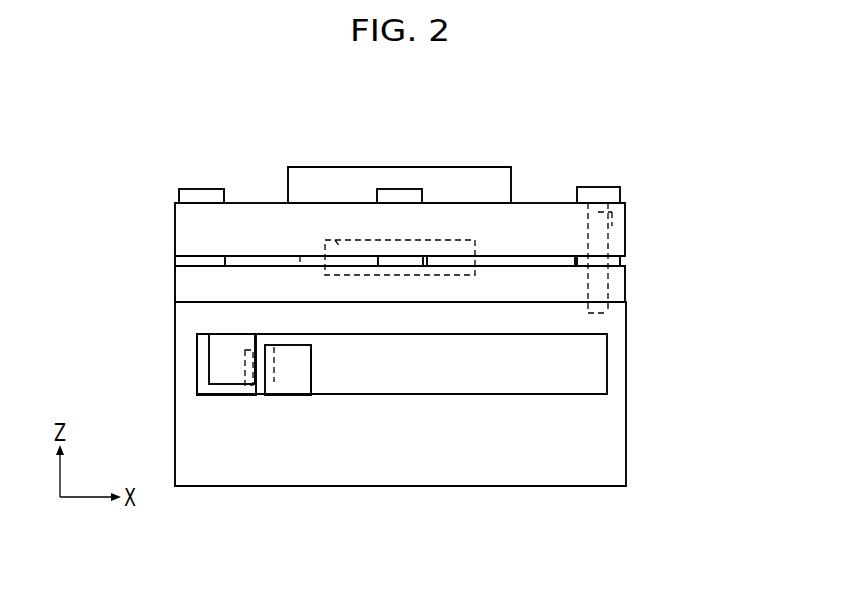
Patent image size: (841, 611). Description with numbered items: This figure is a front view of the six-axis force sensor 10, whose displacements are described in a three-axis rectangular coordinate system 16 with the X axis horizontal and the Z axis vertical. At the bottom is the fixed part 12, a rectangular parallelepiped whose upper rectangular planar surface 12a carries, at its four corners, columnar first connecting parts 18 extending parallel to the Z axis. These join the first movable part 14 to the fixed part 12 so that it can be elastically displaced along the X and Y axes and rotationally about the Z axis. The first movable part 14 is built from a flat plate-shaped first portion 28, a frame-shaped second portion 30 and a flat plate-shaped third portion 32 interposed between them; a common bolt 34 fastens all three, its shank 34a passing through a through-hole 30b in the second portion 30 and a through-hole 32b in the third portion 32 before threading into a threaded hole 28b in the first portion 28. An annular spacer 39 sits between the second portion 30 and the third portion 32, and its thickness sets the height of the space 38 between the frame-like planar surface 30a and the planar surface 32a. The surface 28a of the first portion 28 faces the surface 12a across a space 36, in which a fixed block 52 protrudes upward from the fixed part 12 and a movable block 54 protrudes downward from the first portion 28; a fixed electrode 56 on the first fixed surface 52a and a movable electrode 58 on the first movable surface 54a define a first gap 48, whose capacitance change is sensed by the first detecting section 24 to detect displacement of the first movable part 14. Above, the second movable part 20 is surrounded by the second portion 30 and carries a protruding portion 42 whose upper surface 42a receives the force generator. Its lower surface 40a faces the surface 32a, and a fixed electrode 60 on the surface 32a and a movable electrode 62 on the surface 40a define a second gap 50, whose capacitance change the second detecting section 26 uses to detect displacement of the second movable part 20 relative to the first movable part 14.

The six-axis force sensor 10 is at (141, 165).
The fixed part 12 is at (544, 496).
The rectangular planar surface 12a is at (458, 392).
The first movable part 14 is at (718, 228).
The three-axis rectangular coordinate system 16 is at (73, 518).
The first connecting part 18 is at (624, 387).
The second movable part 20 is at (462, 157).
The first detecting section 24 is at (297, 538).
The second detecting section 26 is at (303, 118).
The first portion 28 is at (618, 318).
The rectangular planar surface 28a is at (538, 334).
The threaded hole 28b is at (608, 313).
The second portion 30 is at (618, 240).
The rectangular frame-like planar surface 30a is at (277, 256).
The through-hole 30b is at (612, 226).
The third portion 32 is at (618, 284).
The rectangular planar surface 32a is at (253, 267).
The through-hole 32b is at (585, 283).
The bolt 34 is at (185, 196).
The shank 34a is at (612, 212).
The space 36 is at (399, 392).
The space 38 is at (510, 258).
The spacer 39 is at (185, 262).
The rectangular planar surface 40a is at (475, 258).
The protruding portion 42 is at (443, 183).
The surface 42a is at (385, 167).
The first gap 48 is at (258, 338).
The second gap 50 is at (366, 250).
The fixed block 52 is at (272, 368).
The first fixed surface 52a is at (304, 372).
The movable block 54 is at (227, 348).
The first movable surface 54a is at (255, 358).
The fixed electrode 56 is at (267, 396).
The movable electrode 58 is at (253, 396).
The fixed electrode 60 is at (300, 266).
The movable electrode 62 is at (340, 238).